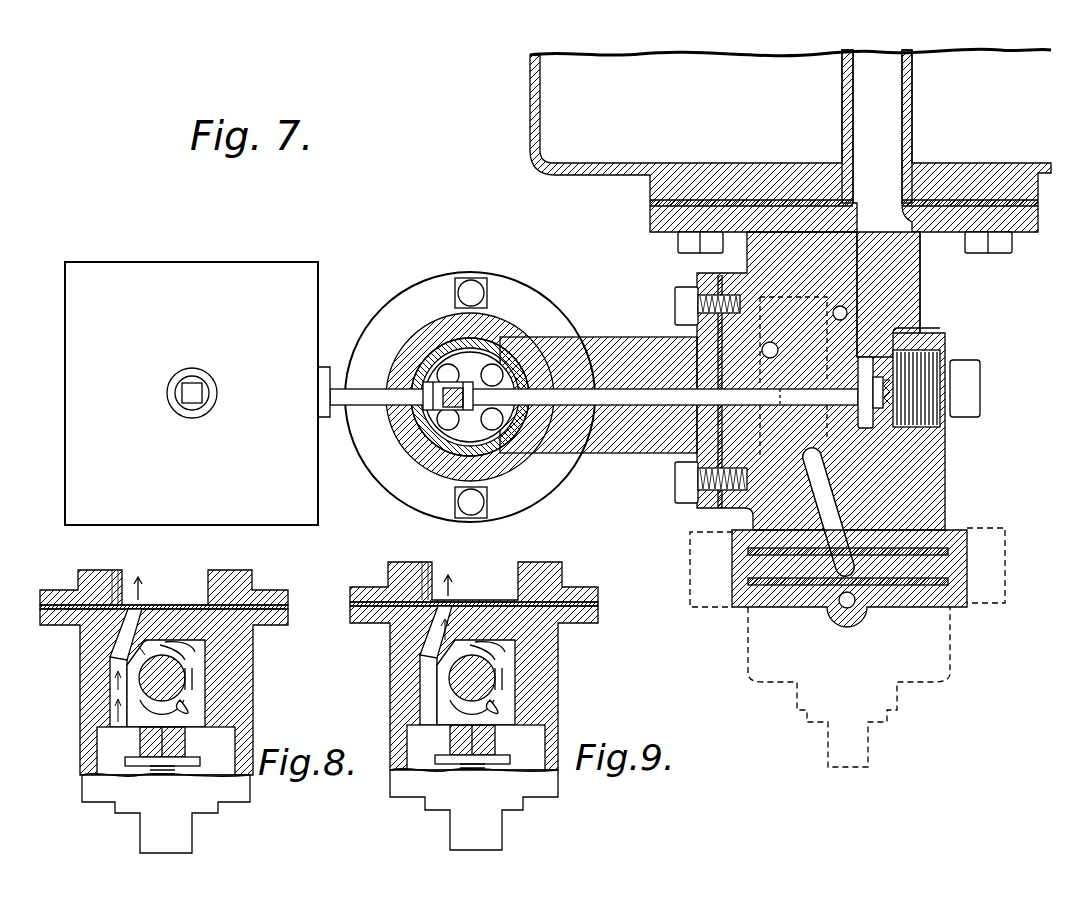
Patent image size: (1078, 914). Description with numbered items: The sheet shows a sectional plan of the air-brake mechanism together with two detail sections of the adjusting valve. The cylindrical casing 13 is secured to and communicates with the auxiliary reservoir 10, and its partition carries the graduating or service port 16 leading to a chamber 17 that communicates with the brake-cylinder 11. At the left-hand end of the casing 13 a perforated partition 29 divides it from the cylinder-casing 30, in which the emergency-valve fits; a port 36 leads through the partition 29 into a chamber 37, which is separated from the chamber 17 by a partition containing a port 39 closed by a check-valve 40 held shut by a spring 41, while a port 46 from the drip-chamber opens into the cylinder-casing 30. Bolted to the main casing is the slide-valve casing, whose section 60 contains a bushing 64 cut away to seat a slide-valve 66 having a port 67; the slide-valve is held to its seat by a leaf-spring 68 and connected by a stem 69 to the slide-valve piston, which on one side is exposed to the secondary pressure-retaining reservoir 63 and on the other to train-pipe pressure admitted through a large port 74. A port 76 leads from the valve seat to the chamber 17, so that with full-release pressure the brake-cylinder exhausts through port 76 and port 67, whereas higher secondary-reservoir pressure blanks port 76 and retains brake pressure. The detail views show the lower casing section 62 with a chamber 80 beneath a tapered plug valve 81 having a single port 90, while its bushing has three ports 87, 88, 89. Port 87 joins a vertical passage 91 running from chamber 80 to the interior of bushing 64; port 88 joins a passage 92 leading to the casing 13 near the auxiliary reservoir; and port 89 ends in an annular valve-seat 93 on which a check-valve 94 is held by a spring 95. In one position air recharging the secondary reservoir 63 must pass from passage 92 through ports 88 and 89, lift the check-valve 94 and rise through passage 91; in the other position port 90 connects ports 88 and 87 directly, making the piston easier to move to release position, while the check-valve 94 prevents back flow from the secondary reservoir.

In FIG. 7, the auxiliary reservoir 10 is at (790, 140).
In FIG. 7, the brake-cylinder 11 is at (912, 95).
In FIG. 7, the cylindrical casing 13 is at (945, 480).
In FIG. 7, the graduating or service port 16 is at (848, 313).
In FIG. 7, the chamber 17 is at (888, 294).
In FIG. 7, the perforated partition 29 is at (740, 608).
In FIG. 7, the cylinder-casing 30 is at (773, 608).
In FIG. 7, the port 36 is at (836, 532).
In FIG. 7, the chamber 37 is at (793, 407).
In FIG. 7, the port 39 is at (871, 409).
In FIG. 7, the check-valve 40 is at (873, 415).
In FIG. 7, the spring 41 is at (893, 383).
In FIG. 7, the port 46 is at (845, 608).
In FIG. 7, the casing section 60 is at (622, 340).
In FIG. 8, the lower casing section 62 is at (80, 733).
In FIG. 9, the lower casing section 62 is at (465, 688).
In FIG. 7, the secondary pressure-retaining reservoir 63 is at (191, 393).
In FIG. 7, the bushing 64 is at (412, 357).
In FIG. 8, the bushing 64 is at (215, 562).
In FIG. 9, the bushing 64 is at (474, 569).
In FIG. 7, the slide-valve 66 is at (480, 440).
In FIG. 7, the recess or port 67 is at (482, 415).
In FIG. 7, the leaf-spring 68 is at (392, 390).
In FIG. 7, the stem 69 is at (432, 442).
In FIG. 7, the port 74 is at (780, 352).
In FIG. 7, the port 76 is at (594, 395).
In FIG. 8, the chamber 80 is at (112, 755).
In FIG. 9, the chamber 80 is at (425, 784).
In FIG. 8, the valve 81 is at (138, 682).
In FIG. 9, the valve 81 is at (411, 707).
In FIG. 8, the port 87 is at (128, 655).
In FIG. 9, the port 87 is at (390, 636).
In FIG. 8, the port 88 is at (185, 662).
In FIG. 9, the port 88 is at (537, 674).
In FIG. 8, the port 89 is at (182, 692).
In FIG. 9, the port 89 is at (559, 697).
In FIG. 8, the port 90 is at (192, 680).
In FIG. 9, the port 90 is at (574, 675).
In FIG. 8, the passage 91 is at (110, 702).
In FIG. 9, the passage 91 is at (382, 690).
In FIG. 7, the passage 92 is at (547, 424).
In FIG. 8, the passage 92 is at (180, 645).
In FIG. 9, the passage 92 is at (548, 642).
In FIG. 8, the annular valve-seat 93 is at (130, 737).
In FIG. 9, the annular valve-seat 93 is at (441, 705).
In FIG. 8, the check-valve 94 is at (150, 760).
In FIG. 9, the check-valve 94 is at (433, 781).
In FIG. 8, the spring 95 is at (170, 776).
In FIG. 9, the spring 95 is at (470, 780).